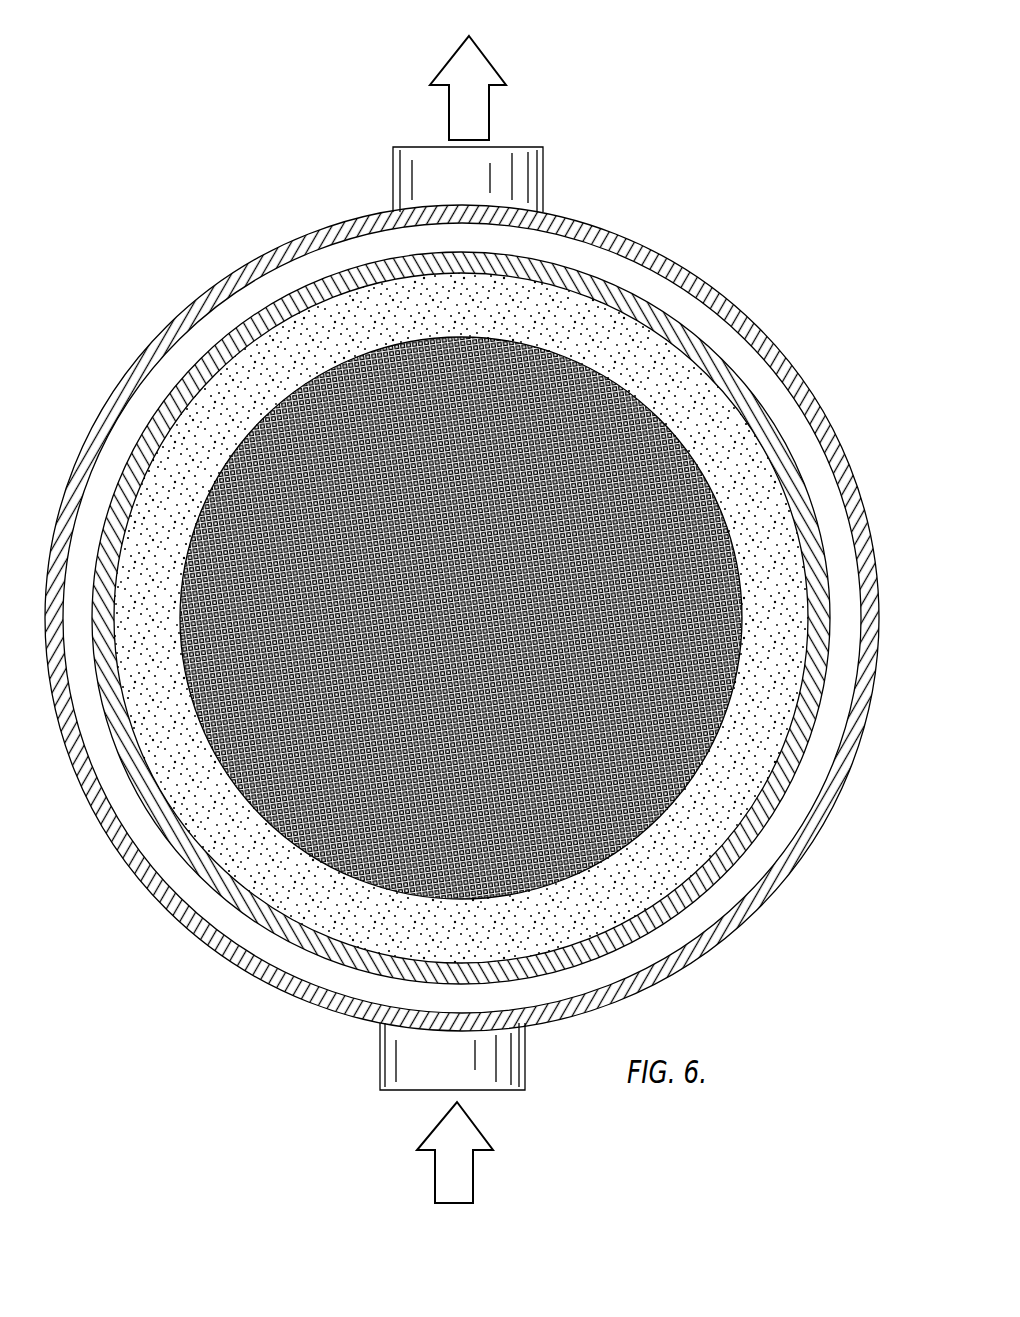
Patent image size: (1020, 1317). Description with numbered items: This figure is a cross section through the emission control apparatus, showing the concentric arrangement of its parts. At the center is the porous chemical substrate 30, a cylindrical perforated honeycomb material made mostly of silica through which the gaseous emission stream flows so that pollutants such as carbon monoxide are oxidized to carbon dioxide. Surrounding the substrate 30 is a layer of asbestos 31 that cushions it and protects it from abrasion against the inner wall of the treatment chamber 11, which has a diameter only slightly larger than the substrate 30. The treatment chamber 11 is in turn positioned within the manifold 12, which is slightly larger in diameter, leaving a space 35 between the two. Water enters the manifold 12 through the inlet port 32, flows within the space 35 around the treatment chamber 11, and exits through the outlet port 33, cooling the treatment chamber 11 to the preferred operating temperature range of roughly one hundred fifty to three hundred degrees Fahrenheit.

The treatment chamber 11 is at (767, 807).
The manifold 12 is at (713, 300).
The porous chemical substrate 30 is at (313, 463).
The layer of asbestos 31 is at (170, 480).
The inlet port 32 is at (410, 1055).
The outlet port 33 is at (517, 180).
The space 35 is at (790, 420).